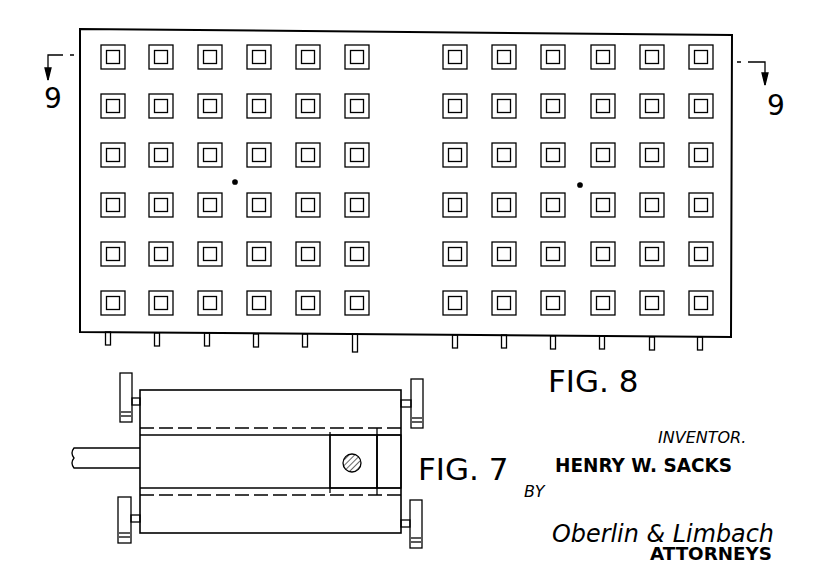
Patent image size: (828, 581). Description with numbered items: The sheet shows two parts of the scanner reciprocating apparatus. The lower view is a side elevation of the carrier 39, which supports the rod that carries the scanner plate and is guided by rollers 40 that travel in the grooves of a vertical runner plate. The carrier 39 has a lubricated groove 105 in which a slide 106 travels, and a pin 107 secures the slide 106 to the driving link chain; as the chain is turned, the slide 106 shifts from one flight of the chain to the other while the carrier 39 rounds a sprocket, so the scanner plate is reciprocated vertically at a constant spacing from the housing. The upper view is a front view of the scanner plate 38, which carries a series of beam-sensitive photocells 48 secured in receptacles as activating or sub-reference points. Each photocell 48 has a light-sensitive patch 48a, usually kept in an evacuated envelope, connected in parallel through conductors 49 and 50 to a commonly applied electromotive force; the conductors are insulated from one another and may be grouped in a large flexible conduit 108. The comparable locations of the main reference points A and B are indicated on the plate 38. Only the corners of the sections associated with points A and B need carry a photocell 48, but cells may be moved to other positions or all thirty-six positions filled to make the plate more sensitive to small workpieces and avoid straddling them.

In FIG. 8, the scanner plate 38 is at (714, 33).
In FIG. 8, the photocells 48 is at (268, 45).
In FIG. 8, the light-sensitive patch 48a is at (103, 301).
In FIG. 8, the conductor 49 is at (358, 351).
In FIG. 8, the conductor 50 is at (106, 339).
In FIG. 8, the flexible conduit 108 is at (655, 350).
In FIG. 8, the main reference point A is at (582, 185).
In FIG. 8, the main reference point B is at (237, 181).
In FIG. 7, the carrier 39 is at (258, 398).
In FIG. 7, the rollers 40 is at (120, 398).
In FIG. 7, the lubricated groove 105 is at (397, 450).
In FIG. 7, the slide 106 is at (328, 448).
In FIG. 7, the pin 107 is at (351, 472).